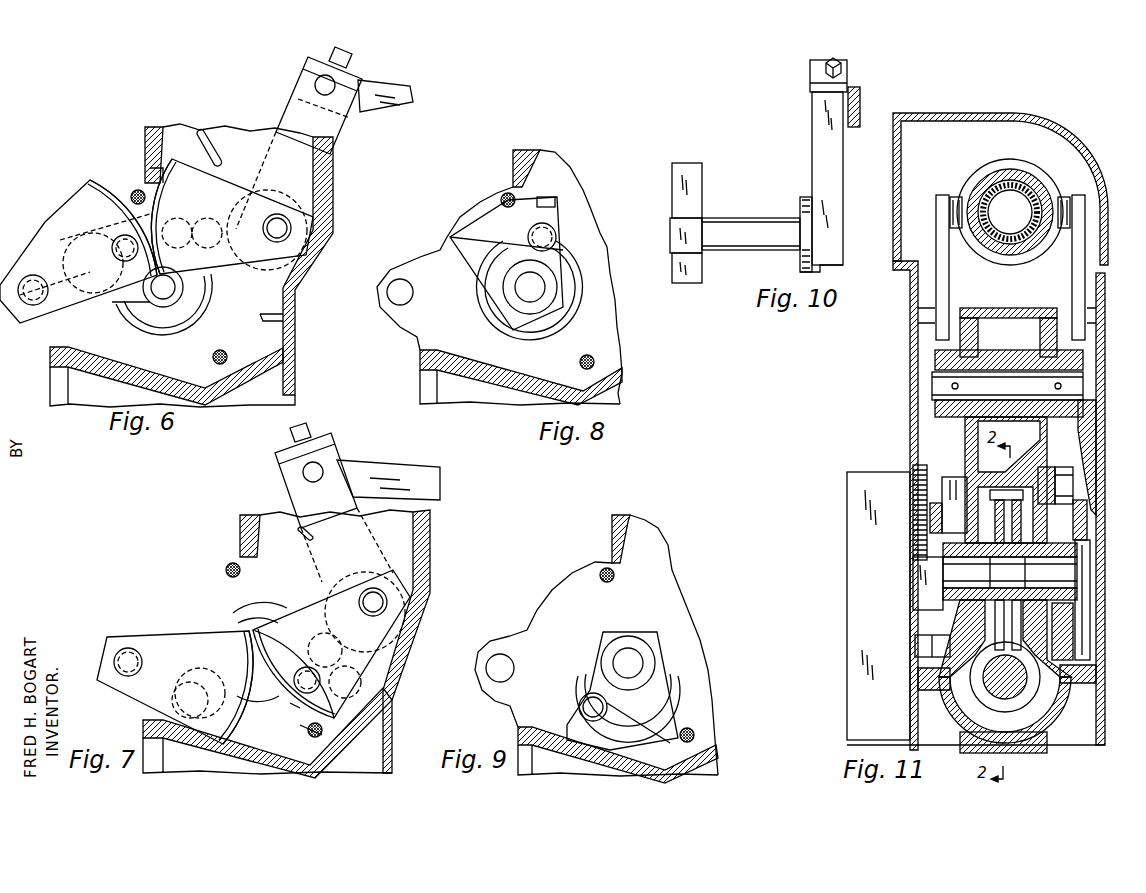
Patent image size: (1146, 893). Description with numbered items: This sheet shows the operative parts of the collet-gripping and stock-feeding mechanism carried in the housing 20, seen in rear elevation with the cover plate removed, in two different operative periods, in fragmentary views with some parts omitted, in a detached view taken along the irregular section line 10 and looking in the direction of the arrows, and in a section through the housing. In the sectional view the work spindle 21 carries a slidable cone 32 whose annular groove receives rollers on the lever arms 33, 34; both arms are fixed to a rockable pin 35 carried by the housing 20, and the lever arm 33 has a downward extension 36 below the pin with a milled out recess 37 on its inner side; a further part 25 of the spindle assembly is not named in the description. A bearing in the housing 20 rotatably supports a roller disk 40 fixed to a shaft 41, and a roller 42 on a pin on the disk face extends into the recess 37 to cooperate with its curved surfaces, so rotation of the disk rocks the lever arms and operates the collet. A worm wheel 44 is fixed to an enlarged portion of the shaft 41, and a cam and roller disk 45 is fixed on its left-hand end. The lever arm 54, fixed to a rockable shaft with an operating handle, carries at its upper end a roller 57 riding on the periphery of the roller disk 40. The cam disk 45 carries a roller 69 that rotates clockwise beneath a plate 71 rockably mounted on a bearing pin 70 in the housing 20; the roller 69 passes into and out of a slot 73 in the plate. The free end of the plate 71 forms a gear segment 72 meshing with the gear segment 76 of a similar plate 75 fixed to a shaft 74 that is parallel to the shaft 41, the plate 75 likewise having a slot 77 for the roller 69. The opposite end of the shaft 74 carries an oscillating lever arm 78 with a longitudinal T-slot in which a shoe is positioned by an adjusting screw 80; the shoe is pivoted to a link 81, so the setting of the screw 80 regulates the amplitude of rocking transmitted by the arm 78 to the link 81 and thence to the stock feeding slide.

In FIG. 6, the section line 10 is at (350, 48).
In FIG. 6, the housing 20 is at (296, 300).
In FIG. 7, the housing 20 is at (418, 640).
In FIG. 8, the housing 20 is at (420, 358).
In FIG. 9, the housing 20 is at (668, 590).
In FIG. 11, the housing 20 is at (1100, 440).
In FIG. 11, the work spindle 21 is at (1040, 180).
In FIG. 11, the bearing sleeve 25 is at (1022, 250).
In FIG. 11, the cone 32 is at (990, 178).
In FIG. 11, the lever arm 33 is at (1085, 296).
In FIG. 11, the lever arm 34 is at (936, 292).
In FIG. 11, the rockable pin 35 is at (932, 386).
In FIG. 11, the downward extension 36 is at (1098, 452).
In FIG. 11, the milled out recess 37 is at (1090, 562).
In FIG. 11, the roller disk 40 is at (1073, 630).
In FIG. 6, the shaft 41 is at (165, 302).
In FIG. 8, the shaft 41 is at (545, 281).
In FIG. 9, the shaft 41 is at (640, 655).
In FIG. 11, the shaft 41 is at (1079, 573).
In FIG. 11, the roller 42 is at (1096, 500).
In FIG. 11, the worm wheel 44 is at (1003, 490).
In FIG. 6, the cam and roller disk 45 is at (127, 304).
In FIG. 7, the cam and roller disk 45 is at (300, 726).
In FIG. 8, the cam and roller disk 45 is at (470, 263).
In FIG. 9, the cam and roller disk 45 is at (690, 718).
In FIG. 11, the cam and roller disk 45 is at (955, 477).
In FIG. 11, the lever arm 54 is at (1045, 467).
In FIG. 11, the roller 57 is at (1063, 470).
In FIG. 6, the roller 69 is at (115, 262).
In FIG. 7, the roller 69 is at (325, 685).
In FIG. 8, the roller 69 is at (560, 238).
In FIG. 9, the roller 69 is at (580, 700).
In FIG. 11, the roller 69 is at (913, 546).
In FIG. 6, the bearing pin 70 is at (33, 306).
In FIG. 7, the bearing pin 70 is at (124, 678).
In FIG. 6, the plate 71 is at (58, 300).
In FIG. 7, the plate 71 is at (160, 630).
In FIG. 11, the plate 71 is at (913, 601).
In FIG. 6, the gear segment 72 is at (113, 178).
In FIG. 7, the gear segment 72 is at (245, 715).
In FIG. 11, the gear segment 72 is at (915, 472).
In FIG. 6, the slot 73 is at (75, 250).
In FIG. 7, the slot 73 is at (200, 668).
In FIG. 6, the shaft 74 is at (292, 233).
In FIG. 7, the shaft 74 is at (388, 605).
In FIG. 10, the shaft 74 is at (746, 218).
In FIG. 6, the plate 75 is at (218, 176).
In FIG. 7, the plate 75 is at (372, 650).
In FIG. 10, the plate 75 is at (703, 202).
In FIG. 6, the gear segment 76 is at (150, 168).
In FIG. 7, the gear segment 76 is at (295, 710).
In FIG. 10, the gear segment 76 is at (680, 162).
In FIG. 6, the slot 77 is at (192, 210).
In FIG. 7, the slot 77 is at (305, 645).
In FIG. 6, the lever arm 78 is at (335, 141).
In FIG. 7, the lever arm 78 is at (342, 497).
In FIG. 10, the lever arm 78 is at (835, 190).
In FIG. 6, the adjusting screw 80 is at (355, 62).
In FIG. 7, the adjusting screw 80 is at (308, 428).
In FIG. 10, the adjusting screw 80 is at (842, 62).
In FIG. 6, the link 81 is at (400, 90).
In FIG. 7, the link 81 is at (415, 470).
In FIG. 10, the link 81 is at (860, 104).